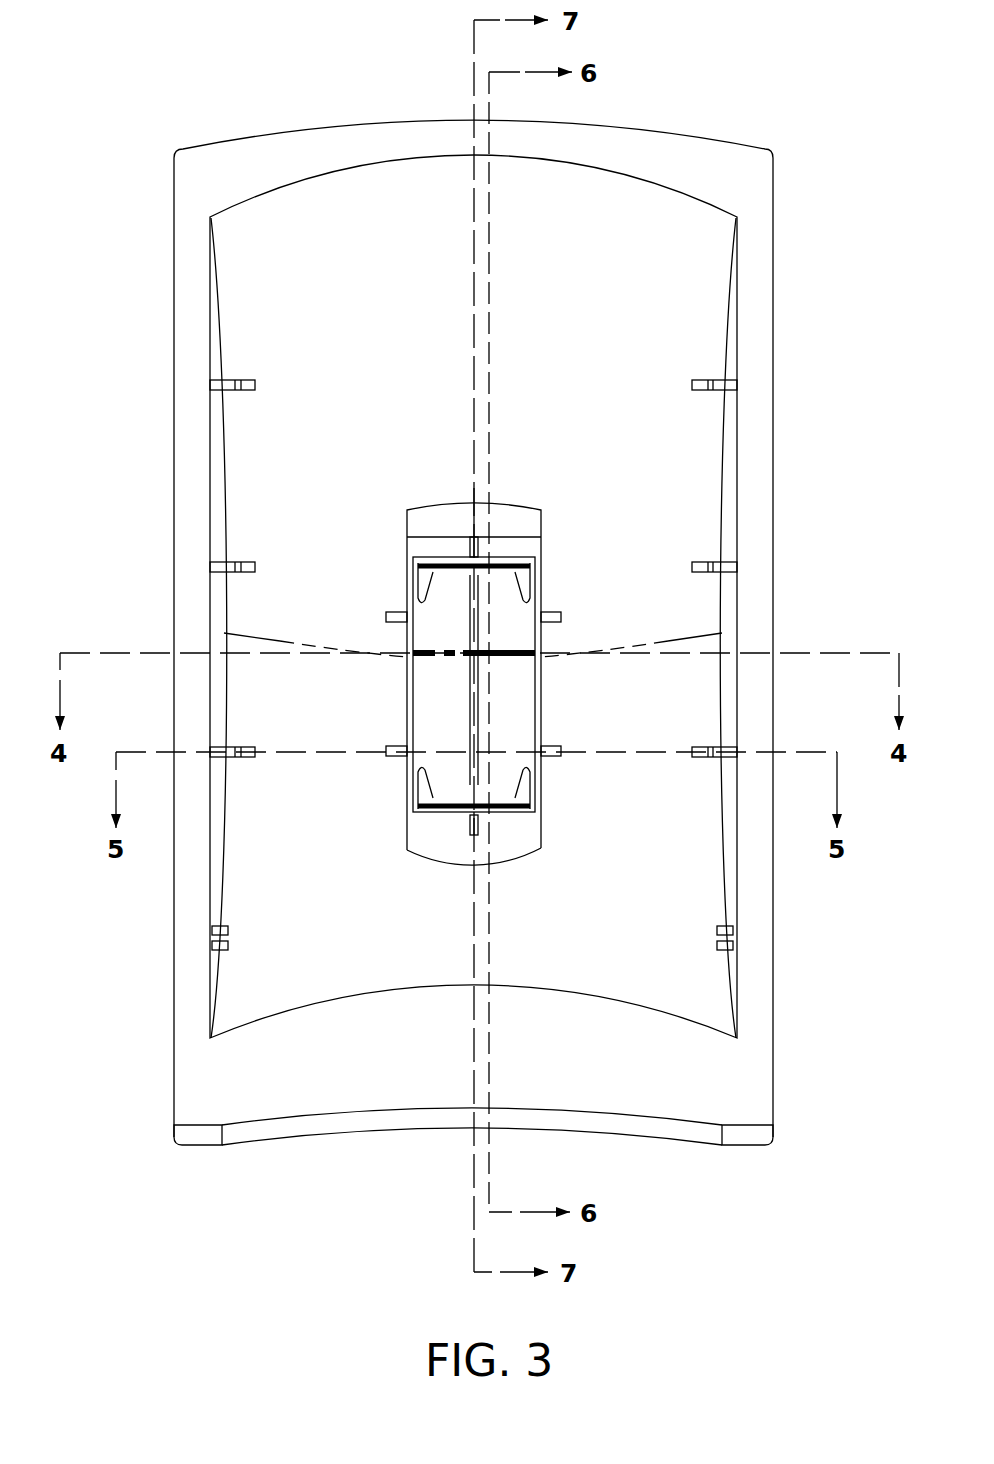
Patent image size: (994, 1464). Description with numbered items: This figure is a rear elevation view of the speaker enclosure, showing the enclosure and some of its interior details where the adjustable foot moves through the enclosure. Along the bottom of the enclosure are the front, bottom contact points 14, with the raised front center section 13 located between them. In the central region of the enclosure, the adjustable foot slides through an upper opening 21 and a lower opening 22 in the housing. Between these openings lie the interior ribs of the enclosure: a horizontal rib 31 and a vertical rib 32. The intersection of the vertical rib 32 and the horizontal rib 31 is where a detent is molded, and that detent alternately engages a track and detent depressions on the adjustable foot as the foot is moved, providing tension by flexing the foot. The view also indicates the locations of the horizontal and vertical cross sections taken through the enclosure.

The raised front center section 13 is at (405, 1128).
The front bottom contact points 14 is at (184, 1146).
The upper opening 21 is at (516, 549).
The lower opening 22 is at (515, 818).
The horizontal rib 31 is at (505, 660).
The vertical rib 32 is at (470, 730).